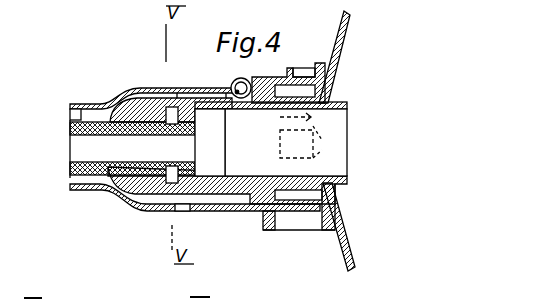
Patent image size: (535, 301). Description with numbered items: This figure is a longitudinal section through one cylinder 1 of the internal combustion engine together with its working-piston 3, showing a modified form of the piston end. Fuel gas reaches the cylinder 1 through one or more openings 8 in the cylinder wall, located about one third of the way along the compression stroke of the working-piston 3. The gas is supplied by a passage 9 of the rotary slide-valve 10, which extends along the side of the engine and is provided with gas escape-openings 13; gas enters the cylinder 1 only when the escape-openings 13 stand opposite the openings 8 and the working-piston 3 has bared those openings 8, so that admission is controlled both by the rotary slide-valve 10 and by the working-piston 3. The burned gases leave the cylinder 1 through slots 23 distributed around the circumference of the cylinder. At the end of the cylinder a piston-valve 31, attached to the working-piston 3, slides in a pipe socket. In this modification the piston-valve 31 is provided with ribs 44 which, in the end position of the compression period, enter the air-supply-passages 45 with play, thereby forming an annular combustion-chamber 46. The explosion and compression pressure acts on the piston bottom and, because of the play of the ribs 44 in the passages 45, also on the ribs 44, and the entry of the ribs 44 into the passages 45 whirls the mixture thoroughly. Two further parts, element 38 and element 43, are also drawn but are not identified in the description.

The cylinder 1 is at (193, 97).
The working-piston 3 is at (247, 186).
The gas inlet-openings in the cylinder-wall 8 is at (240, 111).
The passage 9 is at (261, 82).
The rotary slide-valve 10 is at (246, 78).
The gas escape-openings 13 is at (234, 83).
The slots 23 is at (317, 165).
The piston-valve 31 is at (82, 108).
The opening 38 is at (183, 213).
The support bracket 43 is at (298, 219).
The ribs 44 is at (133, 114).
The air-supply-passages 45 is at (148, 90).
The annular combustion-chamber 46 is at (171, 106).